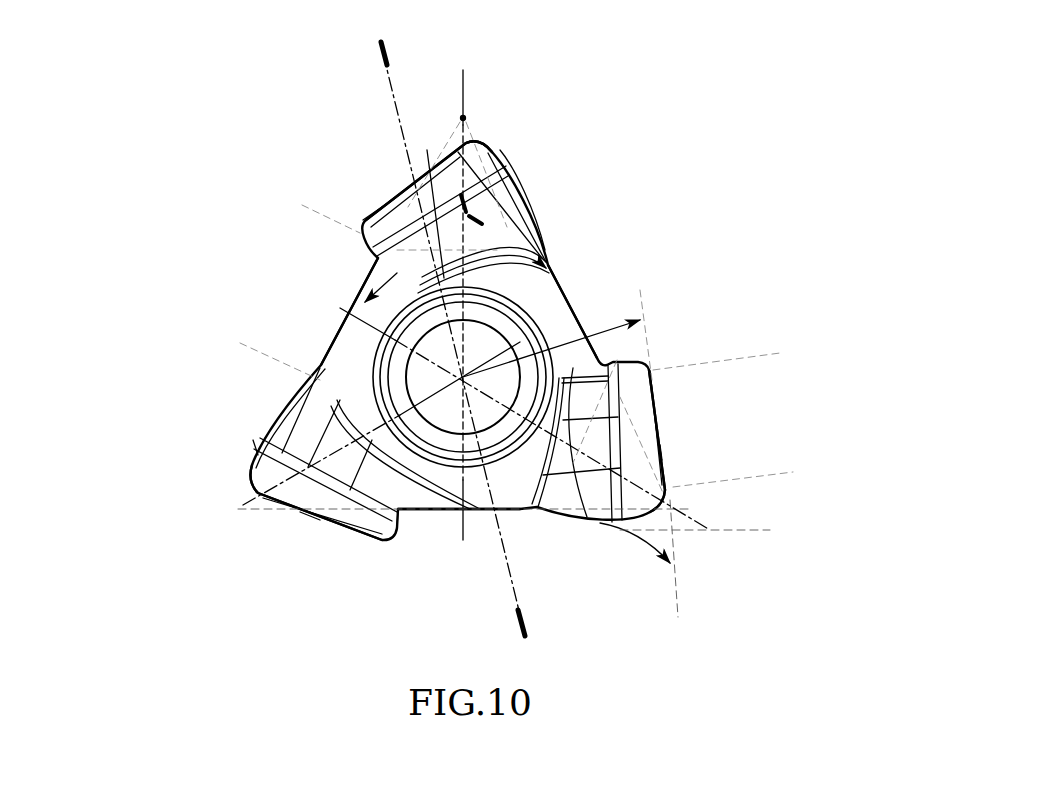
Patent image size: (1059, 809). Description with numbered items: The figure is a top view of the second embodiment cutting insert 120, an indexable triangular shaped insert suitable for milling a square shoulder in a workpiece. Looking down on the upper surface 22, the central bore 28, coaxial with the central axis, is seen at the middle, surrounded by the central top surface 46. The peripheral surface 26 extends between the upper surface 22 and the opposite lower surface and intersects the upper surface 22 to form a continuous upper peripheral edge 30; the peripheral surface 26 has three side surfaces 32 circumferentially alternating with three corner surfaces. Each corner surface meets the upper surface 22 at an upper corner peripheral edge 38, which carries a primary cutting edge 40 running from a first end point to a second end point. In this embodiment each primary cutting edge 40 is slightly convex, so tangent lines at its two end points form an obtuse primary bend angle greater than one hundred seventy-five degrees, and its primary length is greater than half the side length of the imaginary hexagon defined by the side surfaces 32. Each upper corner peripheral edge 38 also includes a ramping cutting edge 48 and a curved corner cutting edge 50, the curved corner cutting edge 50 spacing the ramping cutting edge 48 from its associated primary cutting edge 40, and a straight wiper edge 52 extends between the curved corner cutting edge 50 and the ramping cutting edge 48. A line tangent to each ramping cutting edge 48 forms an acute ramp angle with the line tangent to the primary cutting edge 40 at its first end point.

The upper surface 22 is at (528, 285).
The peripheral surface 26 is at (450, 512).
The central bore 28 is at (442, 394).
The upper peripheral edge 30 is at (401, 533).
The side surface 32 is at (550, 270).
The upper corner peripheral edge 38 is at (483, 140).
The primary cutting edge 40 is at (395, 198).
The central top surface 46 is at (366, 378).
The ramping cutting edge 48 is at (528, 186).
The curved corner cutting edge 50 is at (493, 138).
The straight wiper edge 52 is at (498, 152).
The second embodiment cutting insert 120 is at (612, 132).